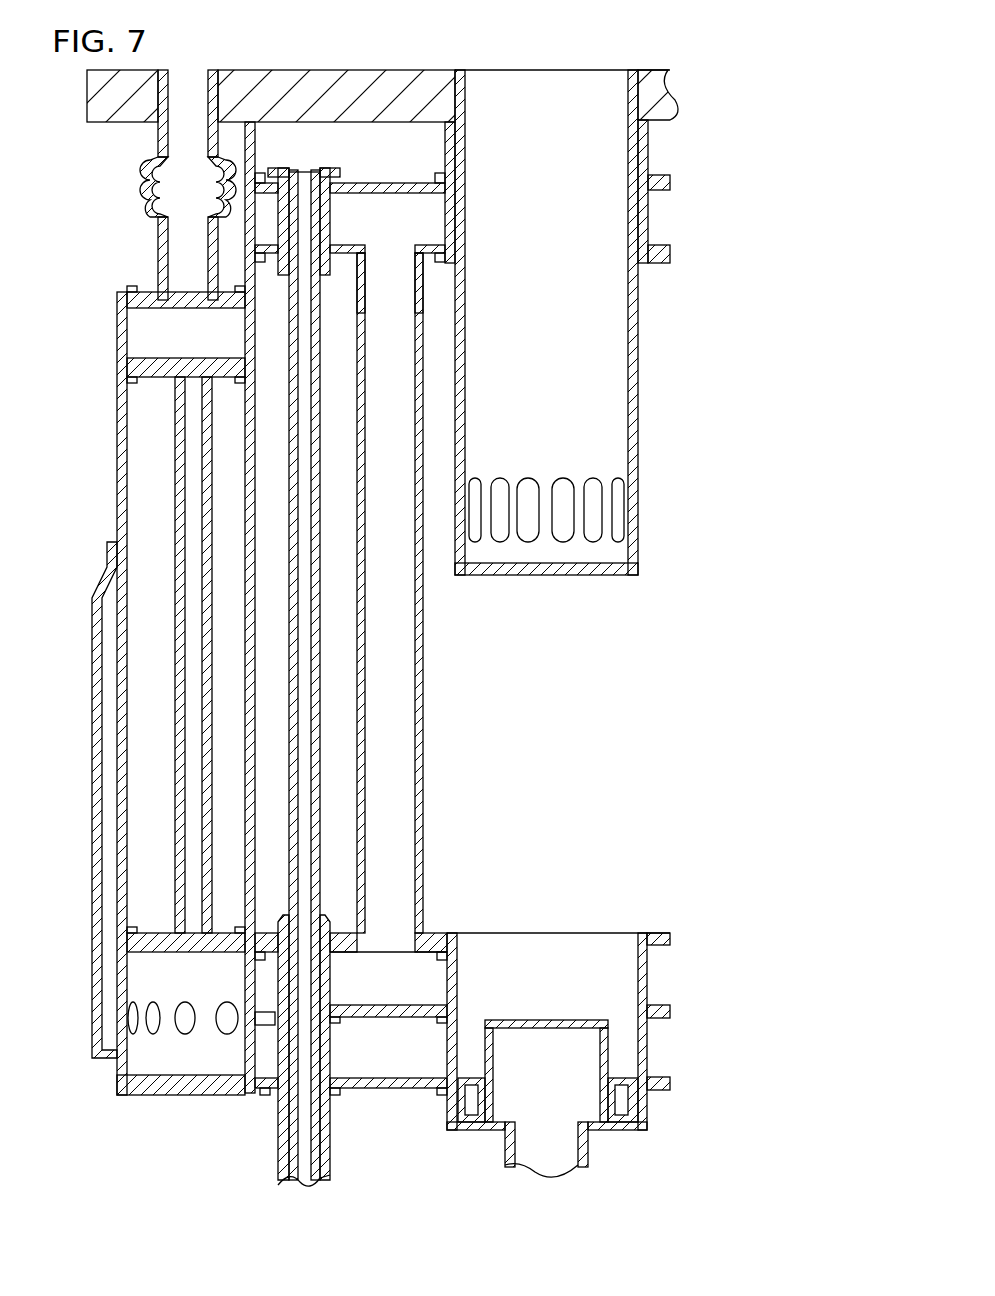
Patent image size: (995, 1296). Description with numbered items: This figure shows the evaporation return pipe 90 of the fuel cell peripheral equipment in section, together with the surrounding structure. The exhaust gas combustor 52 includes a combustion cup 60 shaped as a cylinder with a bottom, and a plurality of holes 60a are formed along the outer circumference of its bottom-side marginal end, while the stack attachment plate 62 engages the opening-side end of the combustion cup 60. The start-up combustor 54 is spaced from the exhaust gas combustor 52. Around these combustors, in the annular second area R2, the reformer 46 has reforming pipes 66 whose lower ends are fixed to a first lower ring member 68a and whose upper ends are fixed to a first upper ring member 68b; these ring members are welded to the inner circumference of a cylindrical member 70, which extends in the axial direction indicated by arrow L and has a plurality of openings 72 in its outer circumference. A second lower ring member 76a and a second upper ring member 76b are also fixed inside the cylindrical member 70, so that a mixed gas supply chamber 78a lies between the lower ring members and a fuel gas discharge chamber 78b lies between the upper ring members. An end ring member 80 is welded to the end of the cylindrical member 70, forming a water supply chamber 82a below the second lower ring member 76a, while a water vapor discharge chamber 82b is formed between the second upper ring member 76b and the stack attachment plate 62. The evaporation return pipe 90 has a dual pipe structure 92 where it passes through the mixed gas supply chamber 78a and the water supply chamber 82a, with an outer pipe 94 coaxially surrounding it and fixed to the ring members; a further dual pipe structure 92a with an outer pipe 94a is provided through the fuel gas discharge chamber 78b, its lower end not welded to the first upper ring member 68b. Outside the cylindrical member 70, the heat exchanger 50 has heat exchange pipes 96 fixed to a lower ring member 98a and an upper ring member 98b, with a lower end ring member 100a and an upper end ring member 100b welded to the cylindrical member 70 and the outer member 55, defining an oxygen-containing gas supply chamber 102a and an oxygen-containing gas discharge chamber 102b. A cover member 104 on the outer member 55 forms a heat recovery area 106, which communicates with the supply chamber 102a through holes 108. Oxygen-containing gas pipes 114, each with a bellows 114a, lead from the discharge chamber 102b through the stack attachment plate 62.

The stack attachment plate 62 is at (366, 72).
The exhaust gas combustor 52 is at (516, 106).
The combustion cup 60 is at (598, 88).
The holes 60a is at (616, 510).
The oxygen-containing gas pipe 114 is at (158, 128).
The bellows 114a is at (152, 167).
The dual pipe structure 92a is at (270, 217).
The upper end ring member 100b is at (150, 300).
The oxygen-containing gas discharge chamber 102b is at (138, 335).
The upper ring member 98b is at (148, 368).
The heat exchange pipes 96 is at (180, 425).
The outer member 55 is at (114, 488).
The cover member 104 is at (97, 662).
The heat recovery area 106 is at (110, 683).
The heat exchanger 50 is at (165, 825).
The holes 108 is at (150, 1027).
The lower end ring member 100a is at (160, 1088).
The oxygen-containing gas supply chamber 102a is at (228, 1062).
The lower ring member 98a is at (150, 938).
The dual pipe structure 92 is at (275, 977).
The outer pipe 94 is at (325, 985).
The outer pipe 94a is at (328, 222).
The second lower ring member 76a is at (433, 1008).
The second upper ring member 76b is at (383, 183).
The mixed gas supply chamber 78a is at (387, 988).
The fuel gas discharge chamber 78b is at (430, 218).
The water supply chamber 82a is at (395, 1072).
The water vapor discharge chamber 82b is at (440, 148).
The end ring member 80 is at (430, 1082).
The first lower ring member 68a is at (445, 933).
The first upper ring member 68b is at (345, 262).
The reforming pipes 66 is at (420, 705).
The cylindrical member 70 is at (250, 666).
The openings 72 is at (252, 640).
The evaporation return pipe 90 is at (320, 885).
The reformer 46 is at (428, 751).
The second area R2 is at (434, 791).
The start-up combustor 54 is at (498, 1150).
The arrow L is at (712, 918).